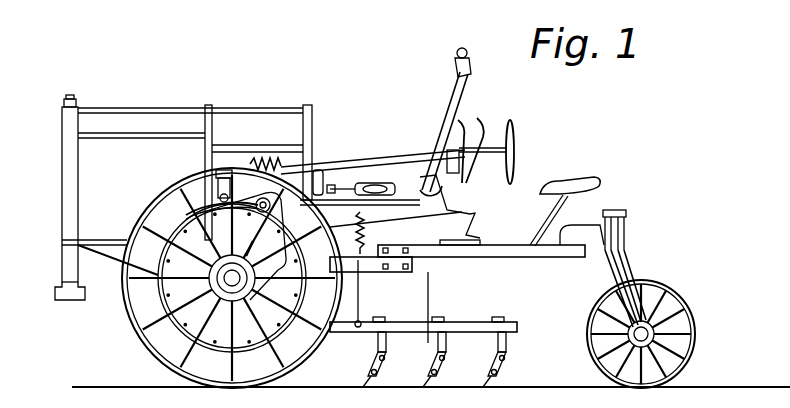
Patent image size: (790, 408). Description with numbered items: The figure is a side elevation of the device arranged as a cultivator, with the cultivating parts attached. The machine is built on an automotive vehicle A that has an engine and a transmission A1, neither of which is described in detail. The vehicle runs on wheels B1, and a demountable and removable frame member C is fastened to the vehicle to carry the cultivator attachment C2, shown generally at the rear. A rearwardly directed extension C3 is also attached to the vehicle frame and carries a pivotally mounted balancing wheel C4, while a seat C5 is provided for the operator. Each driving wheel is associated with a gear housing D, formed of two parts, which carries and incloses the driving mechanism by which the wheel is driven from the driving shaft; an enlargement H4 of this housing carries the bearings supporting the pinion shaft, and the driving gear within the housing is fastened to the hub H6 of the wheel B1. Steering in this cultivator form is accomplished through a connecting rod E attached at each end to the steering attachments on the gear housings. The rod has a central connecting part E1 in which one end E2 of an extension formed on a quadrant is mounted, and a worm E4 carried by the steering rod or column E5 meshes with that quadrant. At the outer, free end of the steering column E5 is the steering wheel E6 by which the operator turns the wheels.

The automotive vehicle A is at (95, 155).
The transmission A1 is at (313, 184).
The wheel B1 is at (124, 290).
The frame member C is at (390, 207).
The cultivator attachment C2 is at (378, 337).
The rearwardly directed extension C3 is at (549, 257).
The balancing wheel C4 is at (676, 288).
The seat C5 is at (570, 180).
The gear housing D is at (180, 318).
The connecting rod E is at (218, 192).
The central connecting part E1 is at (223, 170).
The end of quadrant extension E2 is at (240, 186).
The worm E4 is at (262, 160).
The steering rod or column E5 is at (372, 160).
The steering wheel E6 is at (513, 122).
The enlargement of gear housing H4 is at (188, 217).
The hub H6 is at (228, 300).